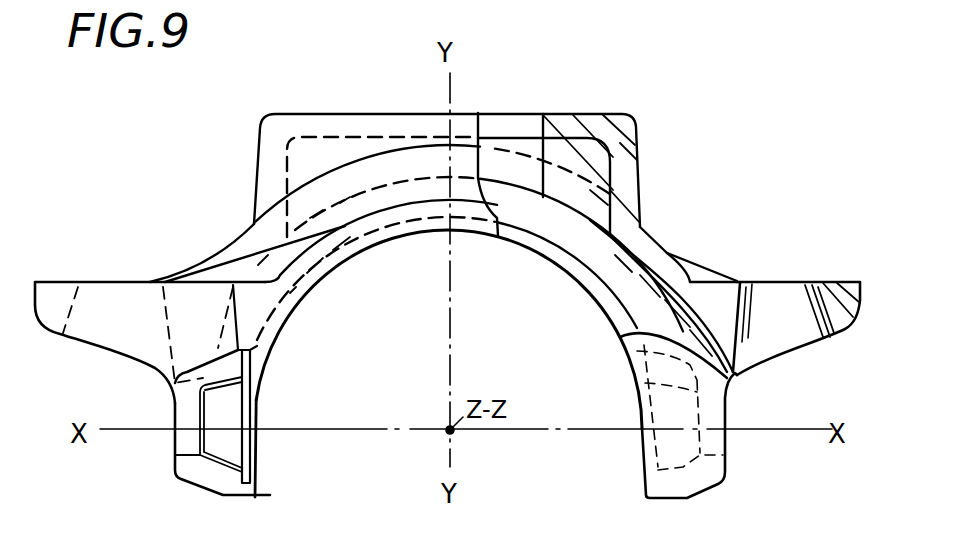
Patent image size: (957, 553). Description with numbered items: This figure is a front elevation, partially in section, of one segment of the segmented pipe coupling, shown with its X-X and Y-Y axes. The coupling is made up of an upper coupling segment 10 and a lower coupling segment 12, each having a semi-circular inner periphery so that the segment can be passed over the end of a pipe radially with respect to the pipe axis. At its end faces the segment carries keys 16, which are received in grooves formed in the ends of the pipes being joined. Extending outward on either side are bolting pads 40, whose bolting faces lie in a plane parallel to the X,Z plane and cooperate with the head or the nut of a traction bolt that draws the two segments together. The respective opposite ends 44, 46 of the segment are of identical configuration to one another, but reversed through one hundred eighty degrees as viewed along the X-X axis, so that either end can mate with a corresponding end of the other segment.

The upper coupling segment 10 is at (443, 270).
The lower coupling segment 12 is at (650, 238).
The keys 16 is at (259, 363).
The bolting pads 40 is at (55, 283).
The opposite end 44 is at (727, 447).
The opposite end 46 is at (178, 444).